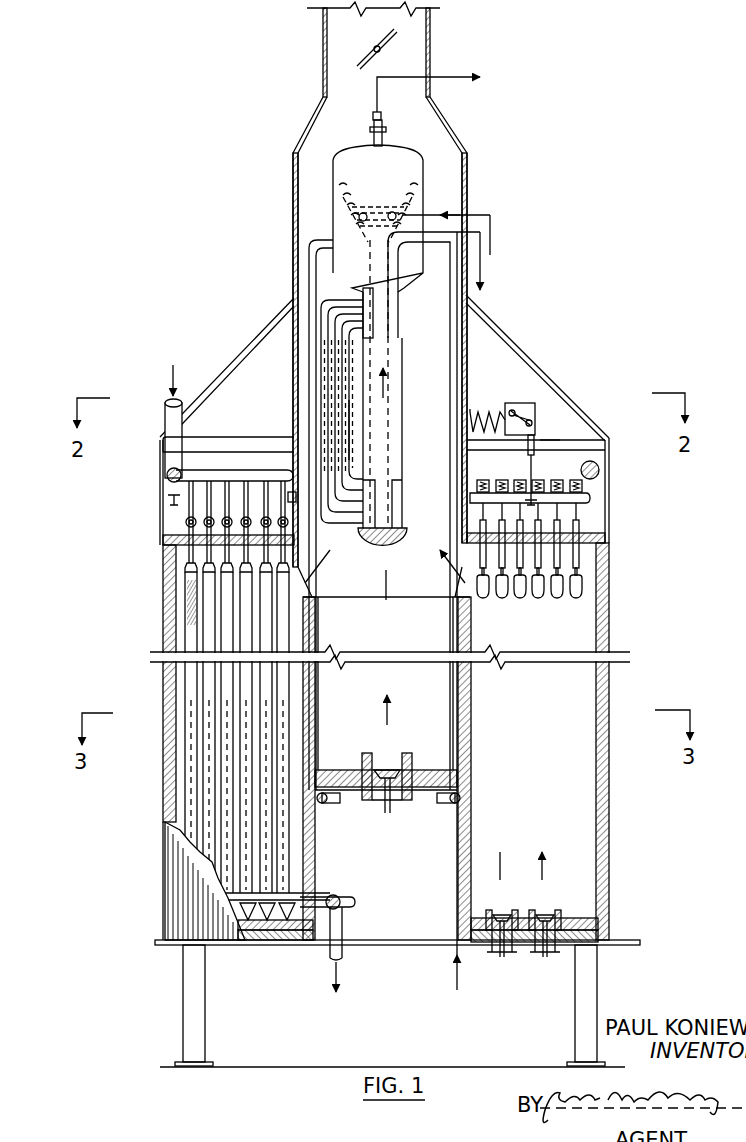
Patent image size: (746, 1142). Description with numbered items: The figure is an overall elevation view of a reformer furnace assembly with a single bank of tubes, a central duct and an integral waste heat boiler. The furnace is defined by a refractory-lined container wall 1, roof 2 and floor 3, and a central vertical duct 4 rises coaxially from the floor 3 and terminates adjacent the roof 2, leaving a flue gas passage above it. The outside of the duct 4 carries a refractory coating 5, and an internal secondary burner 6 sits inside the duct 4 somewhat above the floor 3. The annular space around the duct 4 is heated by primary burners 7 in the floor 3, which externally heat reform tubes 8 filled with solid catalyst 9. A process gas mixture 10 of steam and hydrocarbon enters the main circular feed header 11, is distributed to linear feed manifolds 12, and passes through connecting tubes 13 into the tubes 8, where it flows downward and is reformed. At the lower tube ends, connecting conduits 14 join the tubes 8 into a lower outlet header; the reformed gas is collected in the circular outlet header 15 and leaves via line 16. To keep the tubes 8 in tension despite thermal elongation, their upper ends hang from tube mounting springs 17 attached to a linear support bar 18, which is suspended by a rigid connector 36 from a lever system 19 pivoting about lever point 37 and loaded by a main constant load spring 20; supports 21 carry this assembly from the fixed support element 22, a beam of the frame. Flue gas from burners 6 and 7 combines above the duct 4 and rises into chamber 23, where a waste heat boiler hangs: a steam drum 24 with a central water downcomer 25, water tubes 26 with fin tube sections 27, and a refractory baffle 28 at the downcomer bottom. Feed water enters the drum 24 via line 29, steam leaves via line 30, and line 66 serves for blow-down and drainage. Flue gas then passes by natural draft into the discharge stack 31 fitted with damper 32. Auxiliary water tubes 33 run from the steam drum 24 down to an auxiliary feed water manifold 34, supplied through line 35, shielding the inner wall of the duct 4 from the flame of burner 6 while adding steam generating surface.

The container wall 1 is at (609, 600).
The roof 2 is at (600, 534).
The floor 3 is at (605, 945).
The central vertical duct 4 is at (470, 832).
The refractory material or coating 5 is at (470, 710).
The internal secondary burner 6 is at (400, 755).
The primary burners 7 is at (540, 908).
The reform tubes 8 is at (177, 636).
The solid catalyst 9 is at (183, 612).
The process gas mixture 10 is at (165, 424).
The main circular feed header 11 is at (172, 481).
The linear feed manifolds 12 is at (215, 471).
The connecting tubes 13 is at (186, 520).
The connecting conduits 14 is at (290, 940).
The circular outlet header 15 is at (342, 895).
The outlet line 16 is at (343, 958).
The tube mounting springs 17 is at (483, 480).
The linear support bar 18 is at (592, 498).
The lever system 19 is at (508, 403).
The main constant load spring 20 is at (470, 409).
The supports 21 is at (532, 420).
The fixed support element 22 is at (545, 441).
The chamber 23 is at (294, 268).
The steam drum 24 is at (357, 150).
The central water downcomer 25 is at (402, 394).
The water tubes 26 is at (350, 300).
The fin tube sections 27 is at (357, 442).
The refractory baffle 28 is at (395, 545).
The boiler feed water line 29 is at (490, 250).
The product steam line 30 is at (438, 77).
The discharge stack 31 is at (430, 46).
The damper 32 is at (388, 44).
The auxiliary water tubes 33 is at (324, 240).
The auxiliary feed water manifold 34 is at (447, 805).
The feed water line 35 is at (458, 975).
The rigid connector 36 is at (532, 479).
The lever point 37 is at (528, 450).
The blow-down and drainage line 66 is at (483, 282).